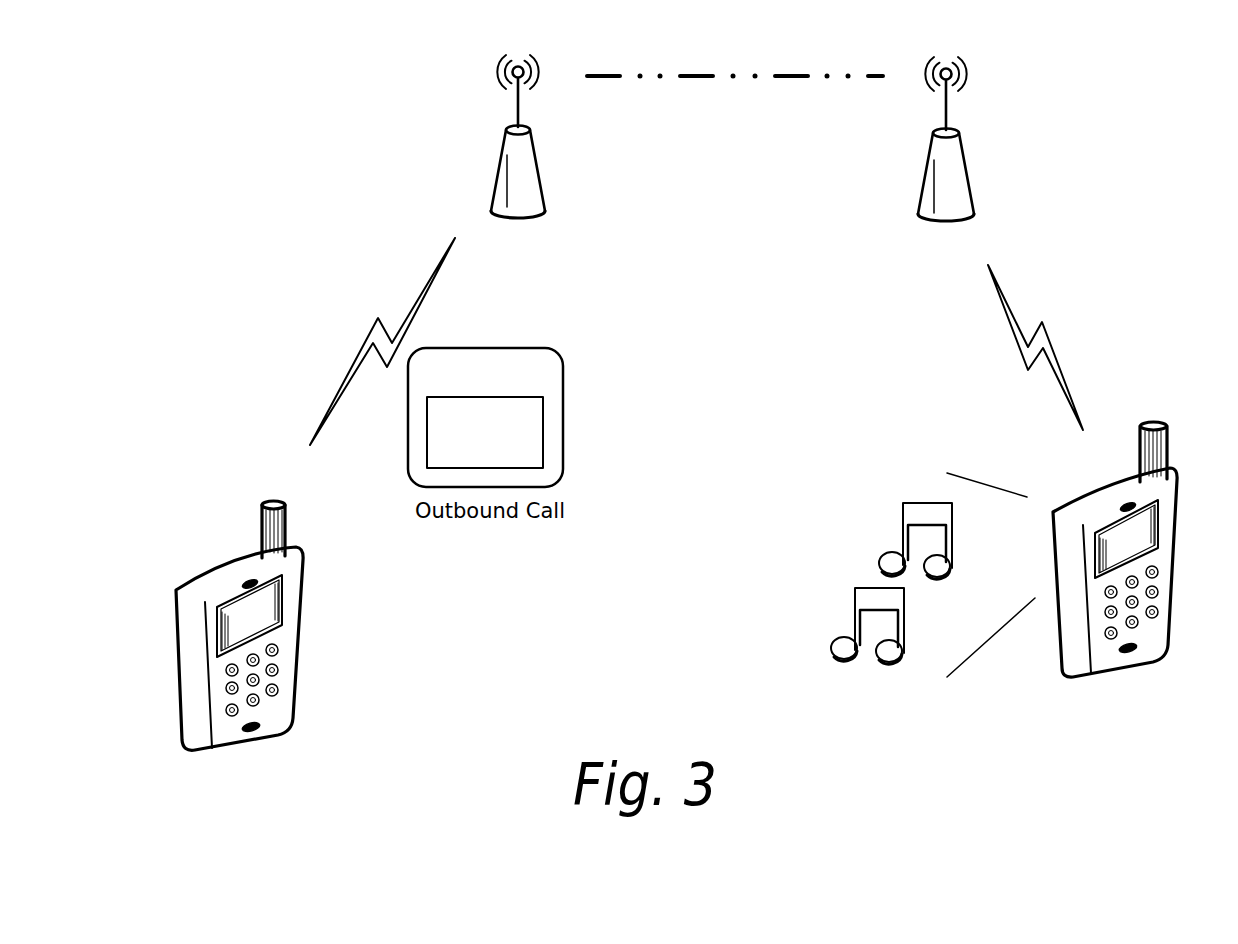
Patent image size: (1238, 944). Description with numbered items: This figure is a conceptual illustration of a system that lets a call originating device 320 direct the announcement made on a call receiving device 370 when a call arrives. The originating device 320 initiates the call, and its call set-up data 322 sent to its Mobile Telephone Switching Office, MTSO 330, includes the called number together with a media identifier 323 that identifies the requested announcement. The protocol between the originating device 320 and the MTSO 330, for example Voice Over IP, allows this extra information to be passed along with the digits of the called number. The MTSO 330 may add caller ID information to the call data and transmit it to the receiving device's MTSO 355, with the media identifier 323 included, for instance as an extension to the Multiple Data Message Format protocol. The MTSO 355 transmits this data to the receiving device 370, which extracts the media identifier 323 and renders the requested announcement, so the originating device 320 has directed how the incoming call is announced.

The call originating device 320 is at (210, 775).
The call set-up data 322 is at (563, 378).
The media identifier 323 is at (543, 457).
The Mobile Telephone Switching Office 330 is at (537, 213).
The Mobile Telephone Switching Office 355 is at (922, 217).
The call receiving device 370 is at (1090, 712).